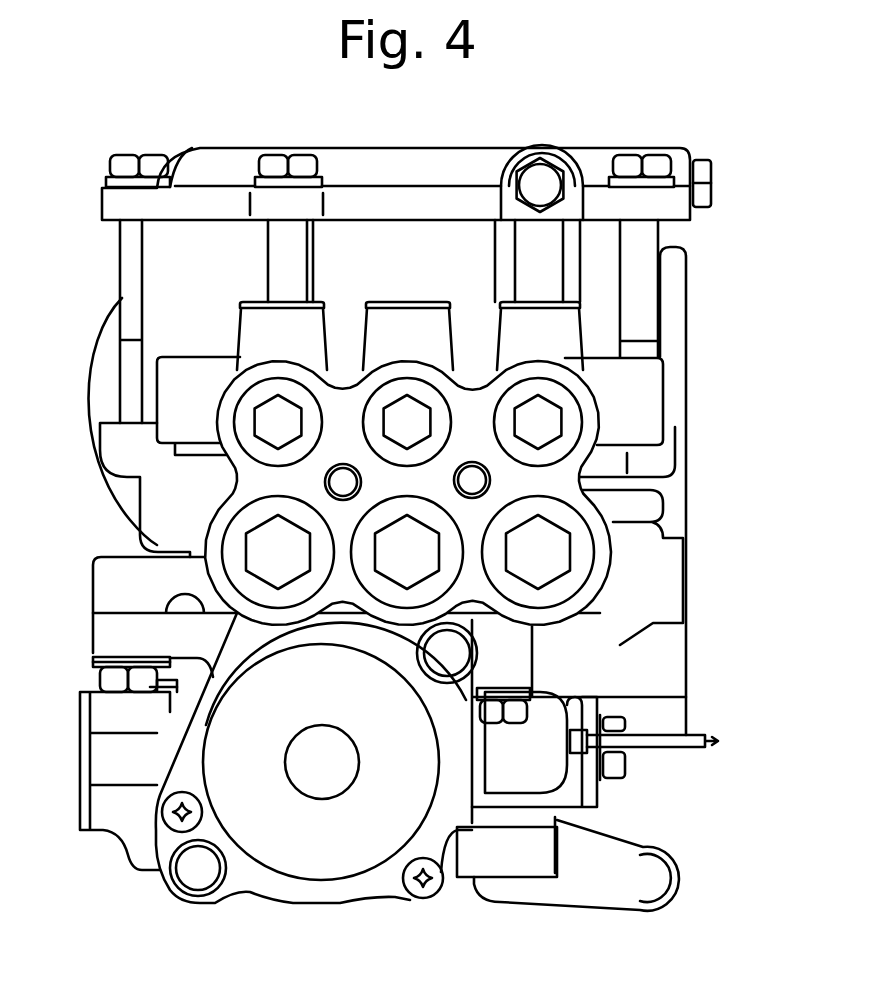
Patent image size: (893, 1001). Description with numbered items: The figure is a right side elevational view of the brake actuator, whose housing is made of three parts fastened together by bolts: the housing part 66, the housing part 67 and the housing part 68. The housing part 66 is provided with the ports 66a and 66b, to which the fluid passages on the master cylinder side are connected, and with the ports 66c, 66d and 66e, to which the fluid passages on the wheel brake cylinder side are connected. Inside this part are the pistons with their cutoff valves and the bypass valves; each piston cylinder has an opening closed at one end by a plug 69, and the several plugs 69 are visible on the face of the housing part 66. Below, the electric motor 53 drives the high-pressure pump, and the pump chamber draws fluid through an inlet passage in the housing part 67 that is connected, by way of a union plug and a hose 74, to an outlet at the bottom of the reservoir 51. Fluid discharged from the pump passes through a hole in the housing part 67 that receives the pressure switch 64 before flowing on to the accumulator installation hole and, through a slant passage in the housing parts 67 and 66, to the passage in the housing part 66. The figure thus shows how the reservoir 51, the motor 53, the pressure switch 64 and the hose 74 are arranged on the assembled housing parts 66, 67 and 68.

The reservoir 51 is at (676, 350).
The electric motor 53 is at (298, 860).
The pressure switch 64 is at (550, 770).
The housing part 66 is at (573, 485).
The port 66a is at (153, 397).
The port 66b is at (663, 398).
The port 66c is at (258, 300).
The port 66d is at (412, 302).
The port 66e is at (540, 303).
The housing part 67 is at (107, 810).
The housing part 68 is at (438, 156).
The plug 69 is at (253, 550).
The hose 74 is at (593, 870).